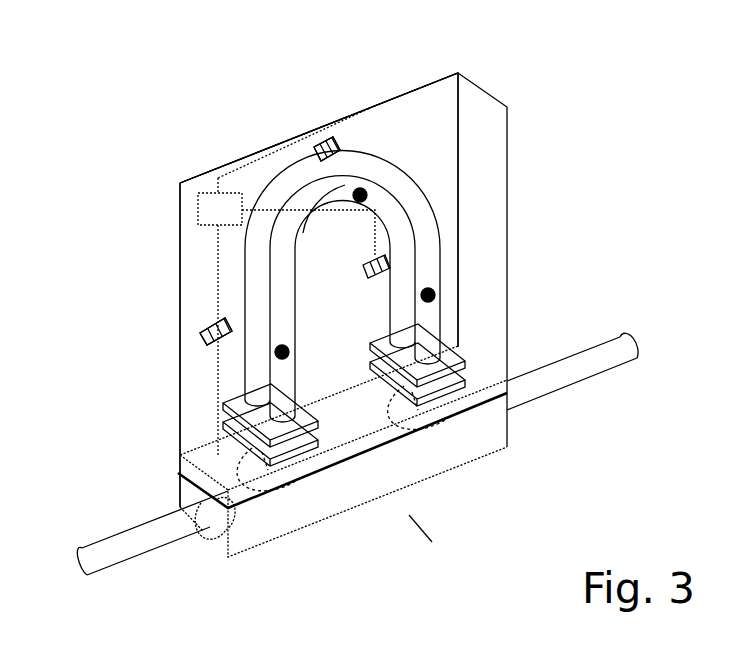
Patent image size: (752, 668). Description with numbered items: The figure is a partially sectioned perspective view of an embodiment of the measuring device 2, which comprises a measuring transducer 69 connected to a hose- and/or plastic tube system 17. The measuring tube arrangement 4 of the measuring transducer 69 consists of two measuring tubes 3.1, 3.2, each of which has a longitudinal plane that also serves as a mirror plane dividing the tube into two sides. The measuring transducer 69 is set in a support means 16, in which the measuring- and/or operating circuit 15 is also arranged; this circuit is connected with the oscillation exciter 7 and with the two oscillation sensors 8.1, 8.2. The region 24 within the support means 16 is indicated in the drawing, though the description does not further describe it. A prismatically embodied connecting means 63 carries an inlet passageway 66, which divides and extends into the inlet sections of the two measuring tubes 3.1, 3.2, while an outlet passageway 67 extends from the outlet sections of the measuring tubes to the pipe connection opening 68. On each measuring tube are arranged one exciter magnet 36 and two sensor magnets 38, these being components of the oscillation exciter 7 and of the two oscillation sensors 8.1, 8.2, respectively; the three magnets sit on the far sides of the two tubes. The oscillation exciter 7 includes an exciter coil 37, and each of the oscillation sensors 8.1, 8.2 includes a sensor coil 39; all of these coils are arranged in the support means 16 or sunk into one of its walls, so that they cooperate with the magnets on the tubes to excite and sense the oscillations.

The measuring device 2 is at (120, 154).
The exciter coil 37 is at (318, 148).
The oscillation exciter 7 is at (328, 140).
The measuring tube arrangement 4 is at (378, 134).
The support means 16 is at (438, 100).
The housing interior 24 is at (420, 152).
The exciter magnet 36 is at (396, 189).
The oscillation sensor 8.2 is at (387, 264).
The sensor magnet 38 is at (435, 293).
The measuring tube 3.1 is at (278, 207).
The measuring tube 3.2 is at (313, 223).
The measuring- and/or operating circuit 15 is at (213, 210).
The sensor coil 39 is at (212, 330).
The oscillation sensor 8.1 is at (205, 335).
The inlet passageway 66 is at (220, 515).
The hose- and/or plastic tube system 17 is at (148, 537).
The connecting means 63 is at (293, 513).
The measuring transducer 69 is at (438, 542).
The pipe connection opening 68 is at (470, 385).
The outlet passageway 67 is at (470, 402).